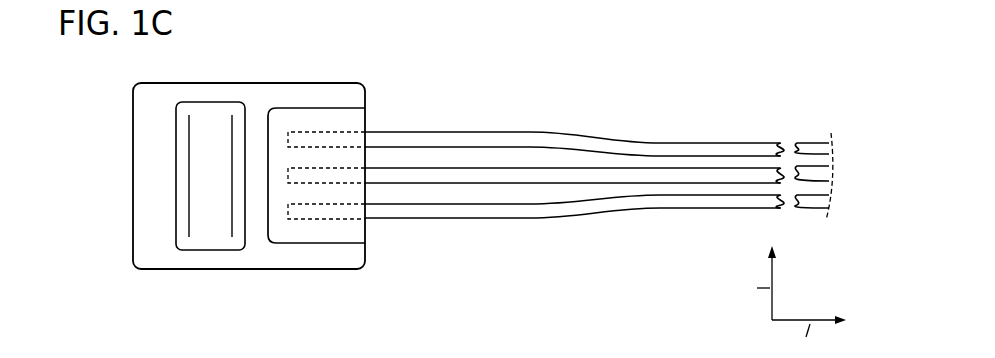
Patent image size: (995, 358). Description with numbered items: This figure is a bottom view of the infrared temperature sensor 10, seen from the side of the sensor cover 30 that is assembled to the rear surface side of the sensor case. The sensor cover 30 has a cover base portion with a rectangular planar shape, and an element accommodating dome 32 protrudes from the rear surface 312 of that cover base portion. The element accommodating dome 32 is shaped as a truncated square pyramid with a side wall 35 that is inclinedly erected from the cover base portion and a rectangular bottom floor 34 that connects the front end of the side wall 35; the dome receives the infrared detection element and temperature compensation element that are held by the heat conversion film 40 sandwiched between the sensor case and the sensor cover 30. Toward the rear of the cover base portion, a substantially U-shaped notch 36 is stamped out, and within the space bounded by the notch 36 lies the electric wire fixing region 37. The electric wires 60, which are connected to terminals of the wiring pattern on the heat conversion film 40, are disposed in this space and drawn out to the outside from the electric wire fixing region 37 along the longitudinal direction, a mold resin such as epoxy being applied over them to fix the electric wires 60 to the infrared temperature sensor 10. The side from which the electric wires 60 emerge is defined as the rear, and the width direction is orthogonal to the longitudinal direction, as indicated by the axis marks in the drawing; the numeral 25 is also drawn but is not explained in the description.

The infrared temperature sensor 10 is at (507, 118).
The wiring member 25 is at (309, 349).
The sensor cover 30 is at (258, 79).
The element accommodating dome 32 is at (205, 250).
The bottom floor 34 is at (186, 140).
The side wall 35 is at (240, 139).
The notch 36 is at (347, 233).
The electric wire fixing region 37 is at (313, 122).
The heat conversion film 40 is at (347, 113).
The electric wires 60 is at (615, 133).
The rear surface 312 is at (317, 255).